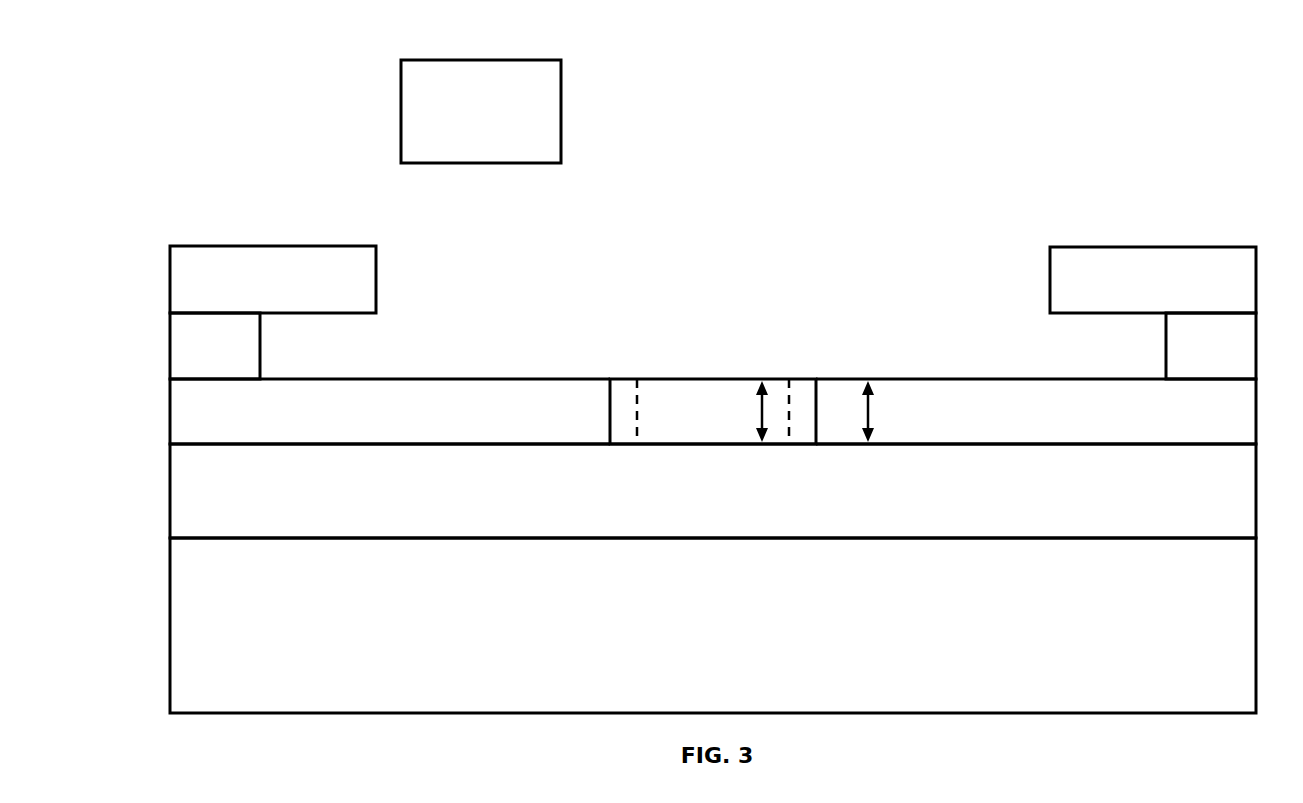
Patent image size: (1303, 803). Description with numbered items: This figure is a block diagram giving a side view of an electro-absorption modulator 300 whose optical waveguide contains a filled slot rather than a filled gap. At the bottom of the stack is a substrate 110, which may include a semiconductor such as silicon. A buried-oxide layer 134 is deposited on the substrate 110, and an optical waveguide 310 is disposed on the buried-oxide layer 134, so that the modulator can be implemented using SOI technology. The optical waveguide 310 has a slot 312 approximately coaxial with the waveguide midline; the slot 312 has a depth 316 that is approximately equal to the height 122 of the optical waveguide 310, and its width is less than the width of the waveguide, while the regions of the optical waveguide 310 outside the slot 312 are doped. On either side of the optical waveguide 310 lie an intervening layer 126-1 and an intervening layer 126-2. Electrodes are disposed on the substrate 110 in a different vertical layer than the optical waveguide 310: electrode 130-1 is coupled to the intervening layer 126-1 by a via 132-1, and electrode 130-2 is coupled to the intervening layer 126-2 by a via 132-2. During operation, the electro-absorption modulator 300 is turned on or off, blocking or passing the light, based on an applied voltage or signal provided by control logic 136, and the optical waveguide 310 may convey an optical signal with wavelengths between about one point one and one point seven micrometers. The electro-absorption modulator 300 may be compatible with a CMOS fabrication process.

The electro-absorption modulator 300 is at (1000, 95).
The control logic 136 is at (481, 111).
The electrode 130-1 is at (273, 279).
The electrode 130-2 is at (1153, 280).
The via 132-1 is at (215, 346).
The via 132-2 is at (1211, 346).
The intervening layer 126-1 is at (390, 411).
The intervening layer 126-2 is at (1036, 411).
The optical waveguide 310 is at (625, 378).
The slot 312 is at (789, 362).
The depth 316 is at (763, 412).
The height 122 is at (868, 410).
The buried-oxide layer 134 is at (713, 491).
The substrate 110 is at (713, 625).